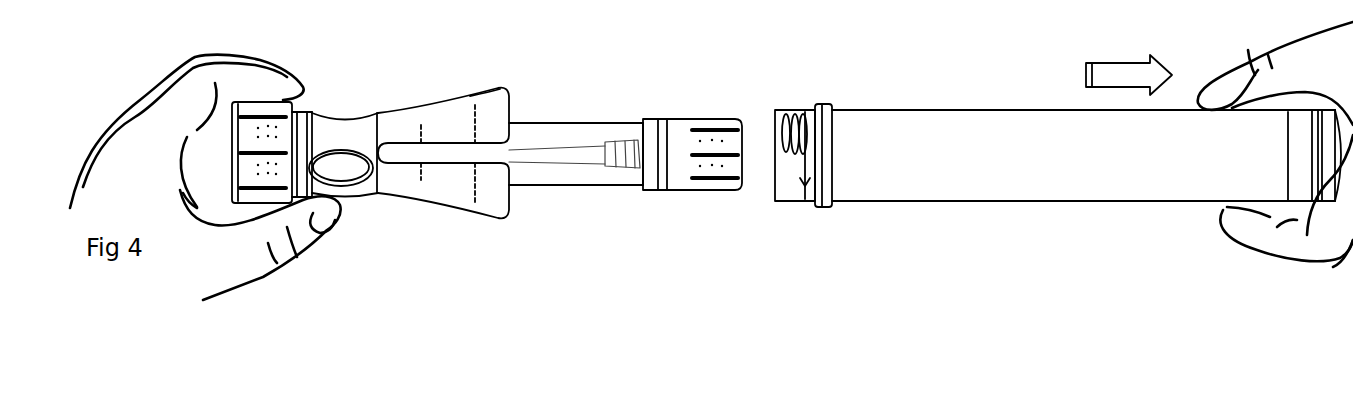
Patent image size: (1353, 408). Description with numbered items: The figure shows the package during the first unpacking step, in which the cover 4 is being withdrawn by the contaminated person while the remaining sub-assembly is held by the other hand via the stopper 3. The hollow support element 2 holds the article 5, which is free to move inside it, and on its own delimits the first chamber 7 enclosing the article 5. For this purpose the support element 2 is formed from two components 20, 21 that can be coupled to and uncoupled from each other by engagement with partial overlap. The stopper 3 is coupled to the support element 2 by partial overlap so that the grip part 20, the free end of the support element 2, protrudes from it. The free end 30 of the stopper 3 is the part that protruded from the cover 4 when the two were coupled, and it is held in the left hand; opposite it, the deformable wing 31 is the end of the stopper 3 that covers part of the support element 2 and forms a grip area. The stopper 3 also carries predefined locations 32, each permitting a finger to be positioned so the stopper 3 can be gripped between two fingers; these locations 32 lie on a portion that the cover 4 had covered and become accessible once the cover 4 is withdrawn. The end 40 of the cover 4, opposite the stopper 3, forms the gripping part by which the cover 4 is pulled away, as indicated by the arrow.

The support element 2 is at (645, 120).
The stopper 3 is at (399, 128).
The cover 4 is at (950, 122).
The article 5 is at (585, 152).
The first chamber 7 is at (599, 180).
The grip part 20 is at (546, 128).
The component of the support element 21 is at (713, 120).
The part of the stopper 30 is at (245, 198).
The deformable wing 31 is at (490, 110).
The predefined location 32 is at (349, 172).
The end of the cover 40 is at (1222, 185).